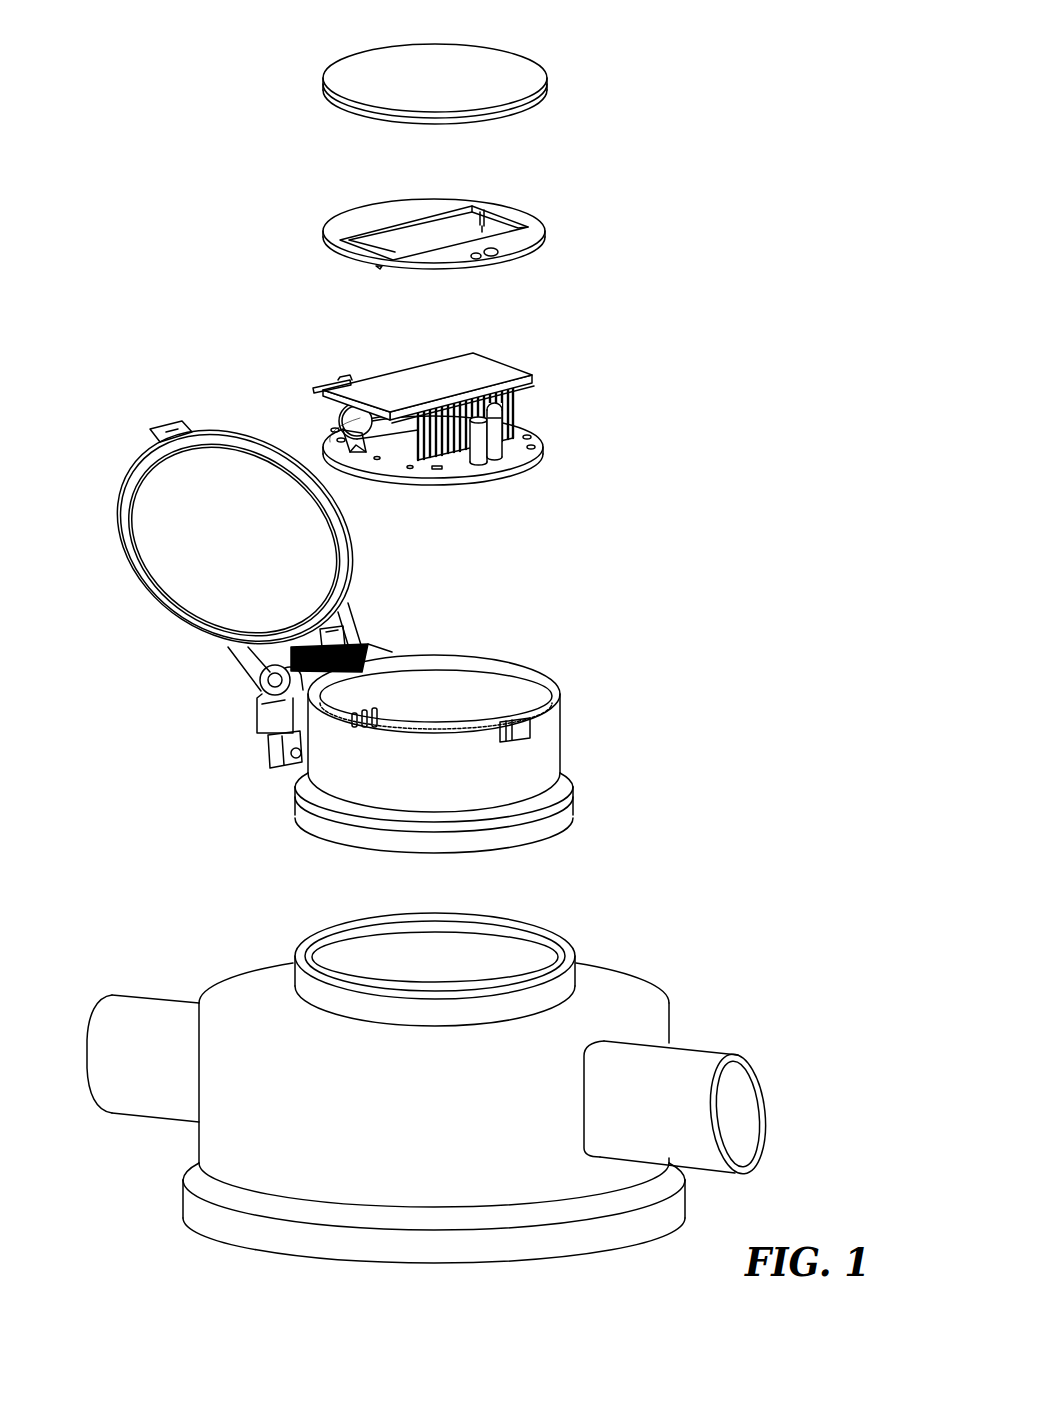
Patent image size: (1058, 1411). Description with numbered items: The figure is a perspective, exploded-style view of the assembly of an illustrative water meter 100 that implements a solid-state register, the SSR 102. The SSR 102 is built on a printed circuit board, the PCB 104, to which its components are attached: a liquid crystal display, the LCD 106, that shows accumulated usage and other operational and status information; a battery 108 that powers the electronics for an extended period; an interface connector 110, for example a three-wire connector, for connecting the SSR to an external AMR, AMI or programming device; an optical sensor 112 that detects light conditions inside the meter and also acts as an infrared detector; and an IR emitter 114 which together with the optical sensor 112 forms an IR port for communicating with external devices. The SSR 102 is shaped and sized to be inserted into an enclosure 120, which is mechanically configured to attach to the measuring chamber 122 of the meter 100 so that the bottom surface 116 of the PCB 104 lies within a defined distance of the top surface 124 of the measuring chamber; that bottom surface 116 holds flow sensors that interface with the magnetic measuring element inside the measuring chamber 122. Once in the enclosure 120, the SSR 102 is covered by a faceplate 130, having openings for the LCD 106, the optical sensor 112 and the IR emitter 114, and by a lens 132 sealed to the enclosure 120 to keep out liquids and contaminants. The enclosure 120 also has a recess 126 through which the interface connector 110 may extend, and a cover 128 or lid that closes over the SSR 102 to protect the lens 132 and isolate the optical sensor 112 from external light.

The water meter 100 is at (779, 65).
The solid-state register (SSR) 102 is at (538, 337).
The printed circuit board (PCB) 104 is at (332, 441).
The liquid crystal display (LCD) 106 is at (449, 414).
The battery 108 is at (392, 430).
The interface connector 110 is at (330, 388).
The optical sensor 112 is at (505, 440).
The IR emitter 114 is at (488, 450).
The bottom surface of the PCB 116 is at (456, 490).
The enclosure 120 is at (548, 748).
The measuring chamber 122 is at (458, 1137).
The top surface of the measuring chamber 124 is at (450, 958).
The recess 126 is at (268, 726).
The cover 128 is at (148, 484).
The faceplate 130 is at (348, 226).
The lens 132 is at (352, 82).